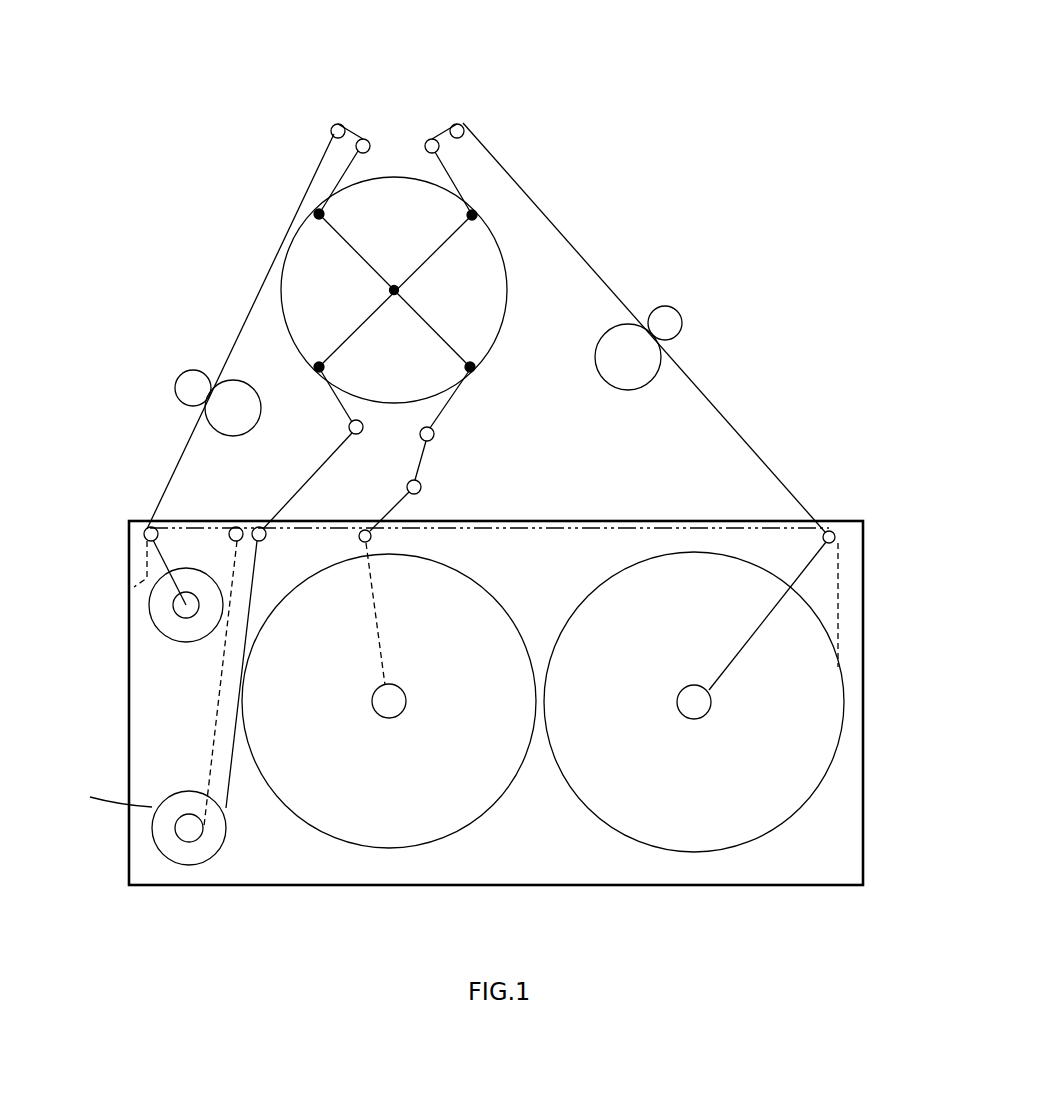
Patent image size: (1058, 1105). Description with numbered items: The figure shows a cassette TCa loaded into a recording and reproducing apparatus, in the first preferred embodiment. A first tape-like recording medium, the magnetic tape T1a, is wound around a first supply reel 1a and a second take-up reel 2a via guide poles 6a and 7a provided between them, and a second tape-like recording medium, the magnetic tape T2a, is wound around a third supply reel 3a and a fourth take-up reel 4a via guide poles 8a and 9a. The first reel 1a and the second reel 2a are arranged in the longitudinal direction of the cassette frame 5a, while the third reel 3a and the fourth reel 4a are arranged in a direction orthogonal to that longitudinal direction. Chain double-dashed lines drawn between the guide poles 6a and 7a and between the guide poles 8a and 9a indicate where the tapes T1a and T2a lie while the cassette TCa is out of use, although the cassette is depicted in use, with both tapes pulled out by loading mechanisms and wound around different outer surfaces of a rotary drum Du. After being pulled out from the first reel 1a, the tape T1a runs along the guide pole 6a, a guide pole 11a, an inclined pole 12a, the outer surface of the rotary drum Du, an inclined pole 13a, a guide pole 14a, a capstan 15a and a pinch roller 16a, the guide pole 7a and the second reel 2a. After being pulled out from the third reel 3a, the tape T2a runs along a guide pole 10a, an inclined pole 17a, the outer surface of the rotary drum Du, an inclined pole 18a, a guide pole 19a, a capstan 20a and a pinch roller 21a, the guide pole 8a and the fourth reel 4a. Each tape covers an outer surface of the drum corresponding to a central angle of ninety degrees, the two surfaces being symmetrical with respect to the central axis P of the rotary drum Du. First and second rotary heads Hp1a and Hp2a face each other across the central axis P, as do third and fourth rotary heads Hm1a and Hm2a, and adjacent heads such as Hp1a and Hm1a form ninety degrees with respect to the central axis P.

The first supply reel 1a is at (468, 805).
The second take-up reel 2a is at (630, 800).
The third supply reel 3a is at (180, 810).
The fourth take-up reel 4a is at (192, 640).
The cassette frame 5a is at (865, 697).
The guide pole 6a is at (372, 536).
The guide pole 7a is at (823, 538).
The guide pole 8a is at (144, 535).
The guide pole 9a is at (229, 538).
The guide pole 10a is at (265, 538).
The guide pole 11a is at (421, 487).
The inclined pole 12a is at (434, 435).
The inclined pole 13a is at (426, 142).
The guide pole 14a is at (467, 126).
The capstan 15a is at (670, 323).
The pinch roller 16a is at (608, 375).
The inclined pole 17a is at (349, 428).
The inclined pole 18a is at (366, 139).
The guide pole 19a is at (331, 130).
The capstan 20a is at (193, 379).
The pinch roller 21a is at (241, 408).
The rotary drum Du is at (388, 182).
The central axis P is at (395, 290).
The first rotary head Hp1a is at (468, 362).
The second rotary head Hp2a is at (319, 220).
The third rotary head Hm1a is at (325, 367).
The fourth rotary head Hm2a is at (466, 215).
The first tape-like recording medium T1a is at (771, 459).
The second tape-like recording medium T2a is at (274, 257).
The cassette TCa is at (895, 572).